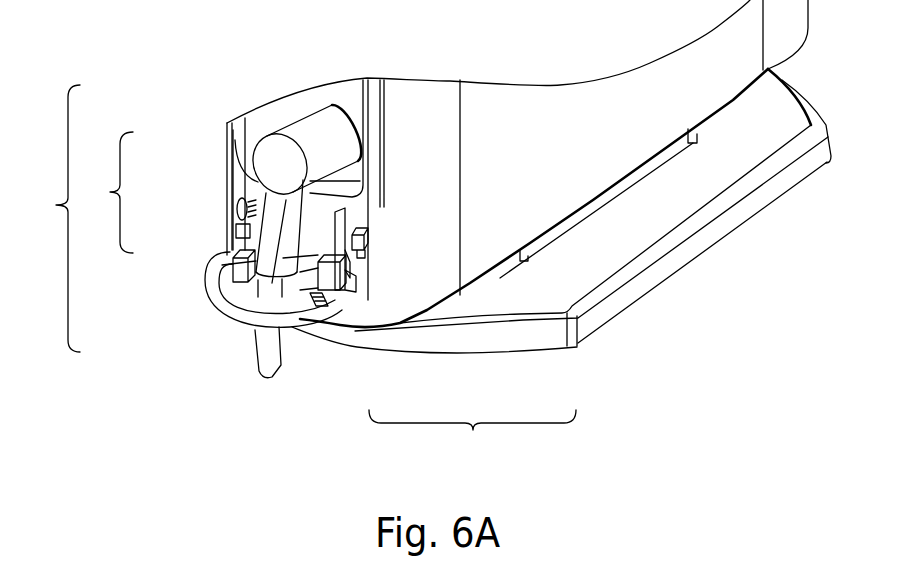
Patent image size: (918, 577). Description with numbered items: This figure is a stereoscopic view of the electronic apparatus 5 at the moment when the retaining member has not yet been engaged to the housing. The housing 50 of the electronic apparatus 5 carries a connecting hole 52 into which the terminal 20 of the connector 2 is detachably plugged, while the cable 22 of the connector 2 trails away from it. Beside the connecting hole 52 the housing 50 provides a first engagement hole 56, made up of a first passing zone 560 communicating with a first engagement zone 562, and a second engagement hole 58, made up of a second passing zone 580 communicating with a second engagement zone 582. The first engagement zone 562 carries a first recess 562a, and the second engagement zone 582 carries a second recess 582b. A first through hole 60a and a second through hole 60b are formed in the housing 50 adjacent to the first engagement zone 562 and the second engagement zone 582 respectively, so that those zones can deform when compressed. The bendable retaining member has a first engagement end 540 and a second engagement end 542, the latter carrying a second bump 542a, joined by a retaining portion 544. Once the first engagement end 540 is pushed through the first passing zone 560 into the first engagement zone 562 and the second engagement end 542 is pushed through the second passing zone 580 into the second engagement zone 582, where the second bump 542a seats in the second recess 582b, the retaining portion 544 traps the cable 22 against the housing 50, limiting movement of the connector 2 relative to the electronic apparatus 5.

The connector 2 is at (56, 218).
The electronic apparatus 5 is at (243, 47).
The terminal 20 is at (278, 158).
The cable 22 is at (263, 352).
The housing 50 is at (568, 182).
The connecting hole 52 is at (356, 112).
The first engagement hole 56 is at (105, 192).
The second engagement hole 58 is at (472, 437).
The first through hole 60a is at (233, 206).
The second through hole 60b is at (357, 260).
The first engagement end 540 is at (215, 252).
The second engagement end 542 is at (334, 292).
The second bump 542a is at (316, 314).
The retaining portion 544 is at (212, 290).
The first passing zone 560 is at (230, 223).
The first engagement zone 562 is at (232, 170).
The first recess 562a is at (230, 187).
The second passing zone 580 is at (368, 287).
The second engagement zone 582 is at (357, 213).
The second recess 582b is at (362, 223).